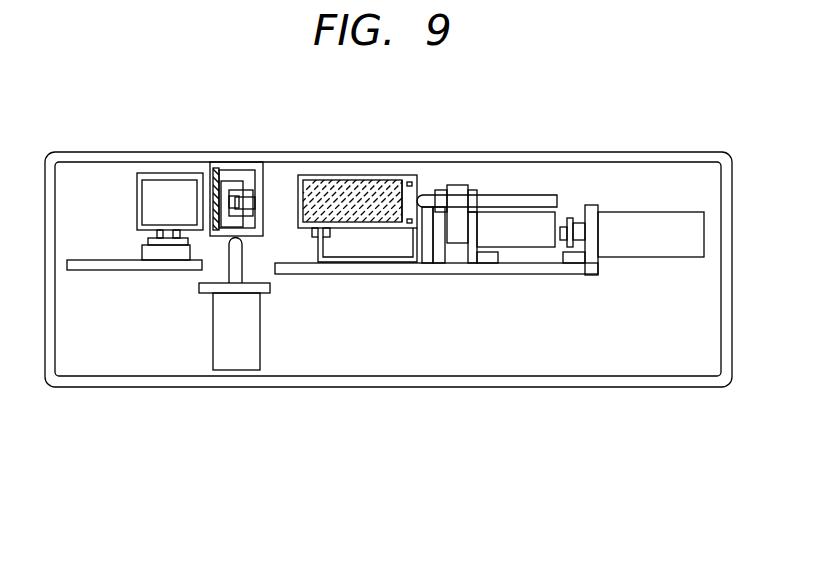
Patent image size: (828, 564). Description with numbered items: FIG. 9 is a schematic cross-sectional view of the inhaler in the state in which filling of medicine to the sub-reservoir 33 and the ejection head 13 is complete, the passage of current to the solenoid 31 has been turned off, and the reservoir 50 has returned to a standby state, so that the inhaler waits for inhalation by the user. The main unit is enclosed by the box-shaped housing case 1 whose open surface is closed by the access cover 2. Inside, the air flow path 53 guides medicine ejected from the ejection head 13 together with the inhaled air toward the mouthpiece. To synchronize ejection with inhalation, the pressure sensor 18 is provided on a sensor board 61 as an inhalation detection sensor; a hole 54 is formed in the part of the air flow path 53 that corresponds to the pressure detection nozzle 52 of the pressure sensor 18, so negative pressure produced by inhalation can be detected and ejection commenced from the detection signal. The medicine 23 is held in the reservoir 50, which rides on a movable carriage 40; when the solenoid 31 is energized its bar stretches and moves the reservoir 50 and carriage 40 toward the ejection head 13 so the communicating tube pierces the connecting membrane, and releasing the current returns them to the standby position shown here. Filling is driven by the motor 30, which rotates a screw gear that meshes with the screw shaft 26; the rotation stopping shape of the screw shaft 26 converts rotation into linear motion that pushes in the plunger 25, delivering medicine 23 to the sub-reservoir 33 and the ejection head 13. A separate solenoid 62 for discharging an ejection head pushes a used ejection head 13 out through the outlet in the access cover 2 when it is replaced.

The housing case 1 is at (247, 383).
The access cover 2 is at (381, 155).
The ejection head 13 is at (222, 238).
The pressure sensor 18 is at (150, 260).
The medicine 23 is at (343, 220).
The plunger (movable wall) 25 is at (414, 190).
The screw shaft 26 is at (521, 203).
The motor 30 is at (525, 240).
The solenoid 31 is at (650, 248).
The sub-reservoir 33 is at (225, 284).
The movable carriage 40 is at (450, 266).
The reservoir 50 is at (378, 234).
The pressure detection nozzle 52 is at (165, 245).
The air flow path 53 is at (139, 199).
The hole 54 is at (168, 222).
The sensor board 61 is at (79, 270).
The solenoid for discharging an ejection head 62 is at (262, 328).